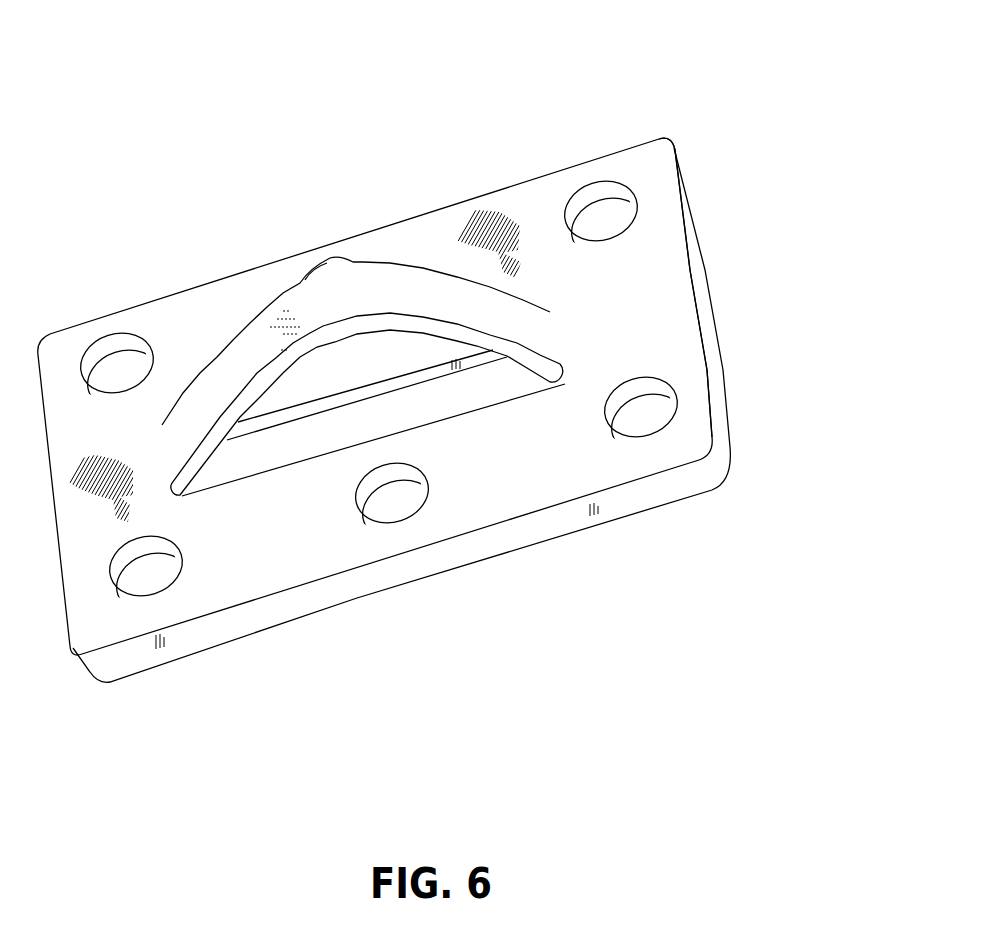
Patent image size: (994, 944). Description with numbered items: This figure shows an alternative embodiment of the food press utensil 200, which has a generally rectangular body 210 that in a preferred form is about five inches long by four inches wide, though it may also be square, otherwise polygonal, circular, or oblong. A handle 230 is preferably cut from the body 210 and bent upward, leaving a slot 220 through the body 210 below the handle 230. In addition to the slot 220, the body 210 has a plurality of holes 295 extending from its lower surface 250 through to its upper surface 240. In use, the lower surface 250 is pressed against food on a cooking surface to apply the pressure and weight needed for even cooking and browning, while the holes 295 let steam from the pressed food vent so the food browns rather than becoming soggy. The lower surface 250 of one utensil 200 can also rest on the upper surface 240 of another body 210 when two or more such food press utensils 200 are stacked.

The food press utensil 200 is at (242, 124).
The body 210 is at (685, 378).
The slot 220 is at (341, 427).
The handle 230 is at (490, 318).
The upper surface 240 is at (650, 238).
The lower surface 250 is at (463, 562).
The holes 295 is at (607, 212).